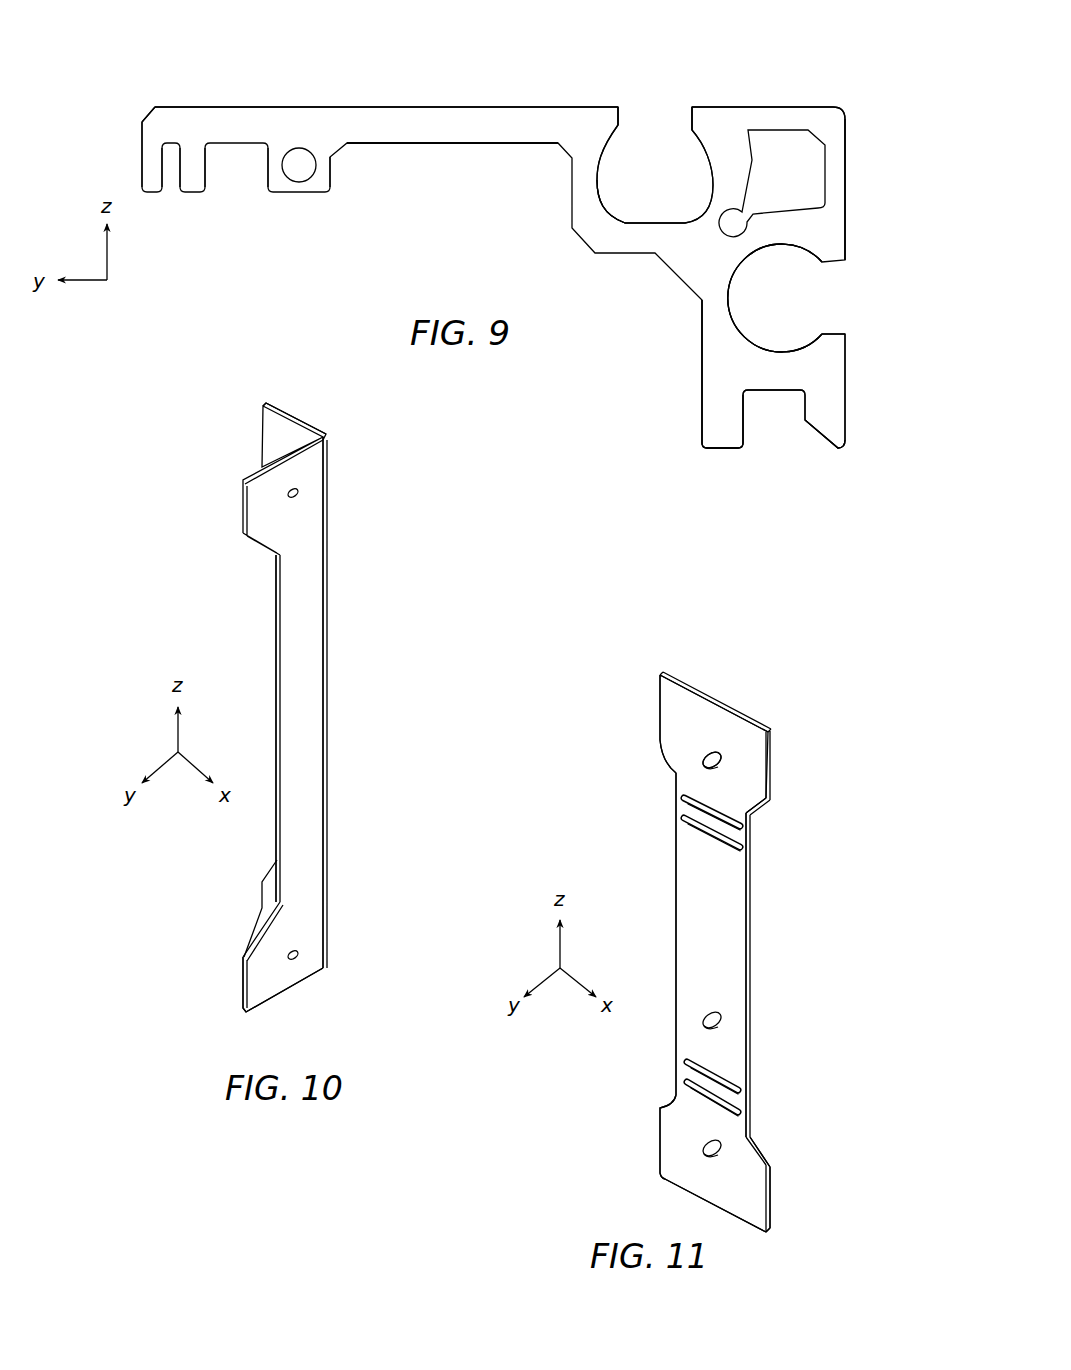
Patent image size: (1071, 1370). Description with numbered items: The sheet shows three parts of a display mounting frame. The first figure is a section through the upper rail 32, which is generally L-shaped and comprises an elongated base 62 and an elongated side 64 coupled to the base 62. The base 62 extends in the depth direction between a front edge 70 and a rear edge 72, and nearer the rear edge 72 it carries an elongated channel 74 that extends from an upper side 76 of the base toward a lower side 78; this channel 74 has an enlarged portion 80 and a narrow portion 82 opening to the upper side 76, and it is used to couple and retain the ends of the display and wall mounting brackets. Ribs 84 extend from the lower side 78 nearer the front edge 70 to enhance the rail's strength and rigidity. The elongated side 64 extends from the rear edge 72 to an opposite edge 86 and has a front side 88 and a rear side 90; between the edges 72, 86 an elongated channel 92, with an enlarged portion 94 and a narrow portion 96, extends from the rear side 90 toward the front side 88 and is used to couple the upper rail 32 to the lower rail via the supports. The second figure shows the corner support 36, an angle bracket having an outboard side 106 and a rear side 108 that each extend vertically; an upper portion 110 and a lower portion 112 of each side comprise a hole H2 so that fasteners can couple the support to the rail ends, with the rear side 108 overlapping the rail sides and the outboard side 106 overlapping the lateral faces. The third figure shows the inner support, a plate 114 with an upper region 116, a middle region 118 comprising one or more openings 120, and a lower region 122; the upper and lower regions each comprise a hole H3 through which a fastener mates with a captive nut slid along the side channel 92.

In FIG. 9, the upper rail 32 is at (102, 96).
In FIG. 9, the elongated base 62 is at (416, 104).
In FIG. 9, the elongated side 64 is at (866, 392).
In FIG. 9, the front edge 70 is at (152, 106).
In FIG. 9, the rear edge 72 is at (840, 108).
In FIG. 9, the elongated channel 74 is at (681, 103).
In FIG. 9, the upper side 76 is at (475, 107).
In FIG. 9, the lower side 78 is at (412, 143).
In FIG. 9, the enlarged portion 80 is at (598, 187).
In FIG. 9, the narrow portion 82 is at (620, 105).
In FIG. 9, the ribs 84 is at (152, 193).
In FIG. 9, the opposite edge 86 is at (838, 450).
In FIG. 9, the front side 88 is at (700, 397).
In FIG. 9, the rear side 90 is at (845, 232).
In FIG. 9, the elongated channel 92 is at (839, 297).
In FIG. 9, the enlarged portion 94 is at (775, 352).
In FIG. 9, the narrow portion 96 is at (835, 333).
In FIG. 10, the corner support 36 is at (233, 628).
In FIG. 10, the outboard side 106 is at (302, 578).
In FIG. 10, the rear side 108 is at (272, 440).
In FIG. 11, the rear side 108 is at (700, 771).
In FIG. 10, the upper portion 110 is at (298, 408).
In FIG. 10, the lower portion 112 is at (290, 990).
In FIG. 10, the hole H2 is at (298, 493).
In FIG. 11, the hole H2 is at (735, 777).
In FIG. 11, the hole H3 is at (705, 1153).
In FIG. 11, the plate 114 is at (689, 948).
In FIG. 11, the upper region 116 is at (743, 741).
In FIG. 11, the middle region 118 is at (727, 937).
In FIG. 11, the openings 120 is at (705, 1026).
In FIG. 11, the lower region 122 is at (748, 1214).